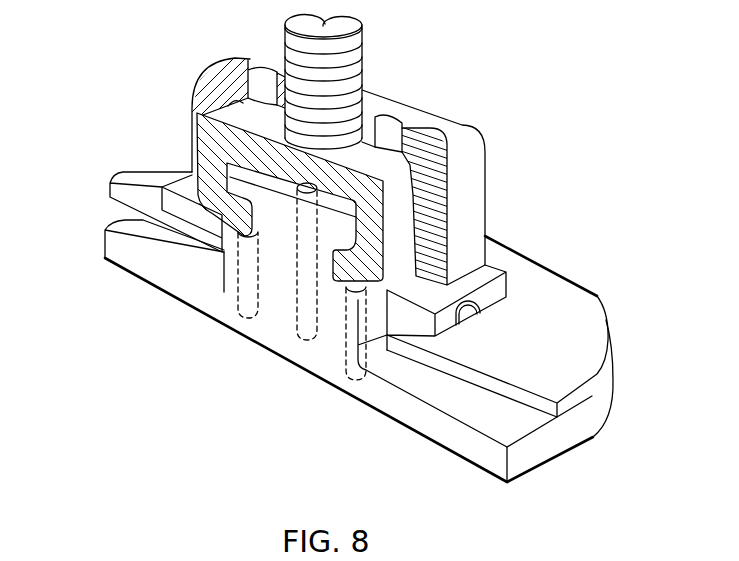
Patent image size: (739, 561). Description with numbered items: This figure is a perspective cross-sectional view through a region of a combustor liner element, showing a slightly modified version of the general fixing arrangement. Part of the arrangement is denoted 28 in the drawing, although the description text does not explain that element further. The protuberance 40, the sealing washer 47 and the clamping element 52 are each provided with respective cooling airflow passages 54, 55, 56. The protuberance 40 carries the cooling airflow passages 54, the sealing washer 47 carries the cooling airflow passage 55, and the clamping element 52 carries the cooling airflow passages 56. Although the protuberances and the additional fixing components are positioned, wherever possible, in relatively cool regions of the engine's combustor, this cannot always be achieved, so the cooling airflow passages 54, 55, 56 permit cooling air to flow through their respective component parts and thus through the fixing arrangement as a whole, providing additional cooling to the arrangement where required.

The base plate 28 is at (583, 313).
The protuberance 40 is at (224, 271).
The sealing washer 47 is at (507, 282).
The clamping element 52 is at (487, 173).
The cooling airflow passages 54 is at (303, 338).
The cooling airflow passage 55 is at (470, 321).
The cooling airflow passages 56 is at (235, 35).